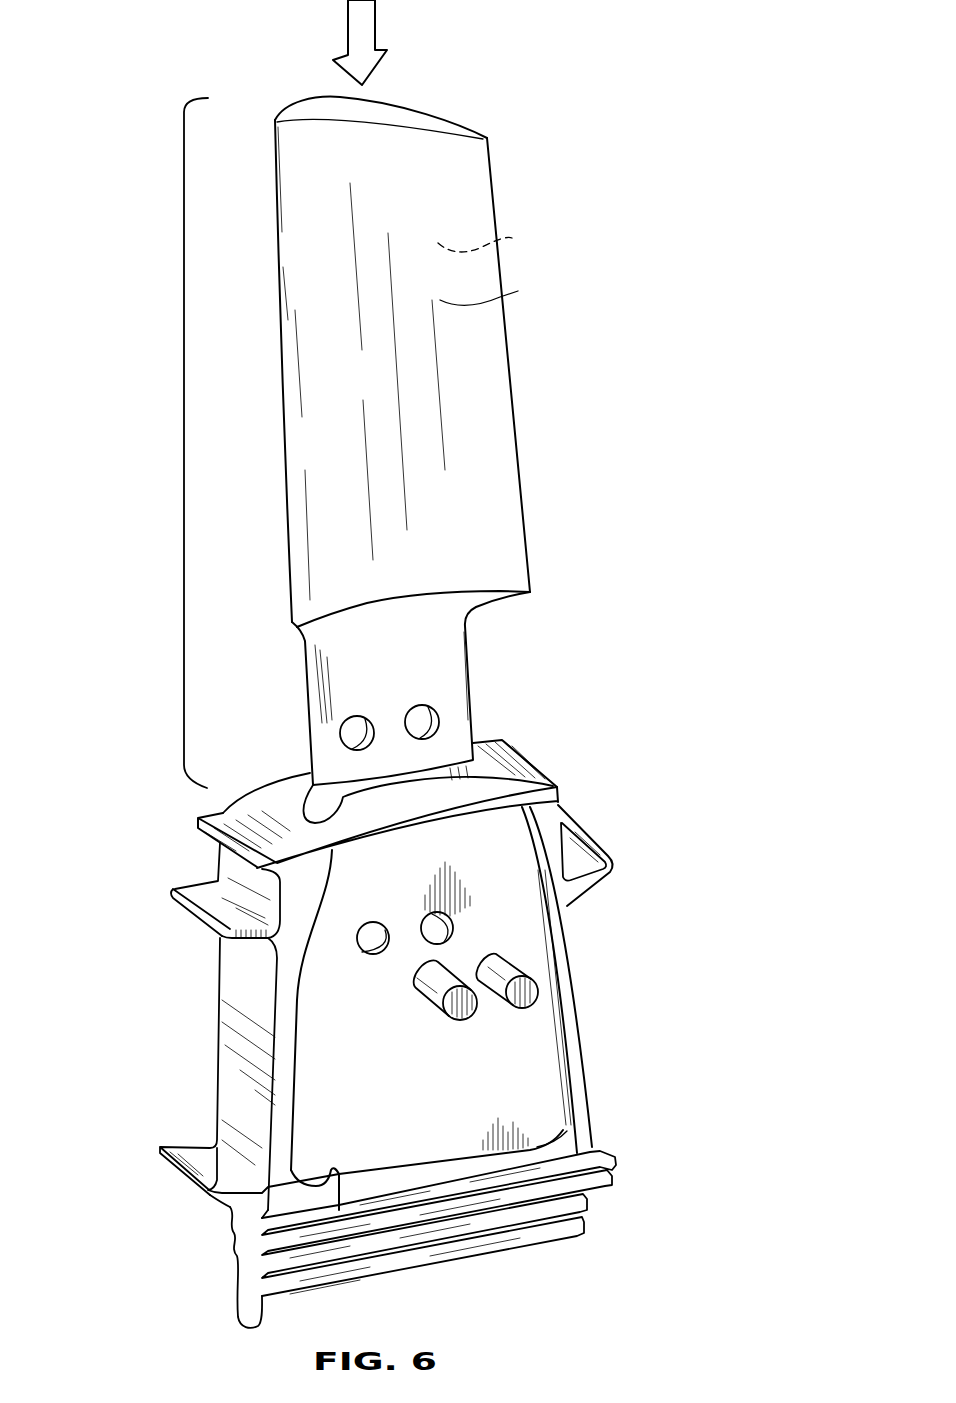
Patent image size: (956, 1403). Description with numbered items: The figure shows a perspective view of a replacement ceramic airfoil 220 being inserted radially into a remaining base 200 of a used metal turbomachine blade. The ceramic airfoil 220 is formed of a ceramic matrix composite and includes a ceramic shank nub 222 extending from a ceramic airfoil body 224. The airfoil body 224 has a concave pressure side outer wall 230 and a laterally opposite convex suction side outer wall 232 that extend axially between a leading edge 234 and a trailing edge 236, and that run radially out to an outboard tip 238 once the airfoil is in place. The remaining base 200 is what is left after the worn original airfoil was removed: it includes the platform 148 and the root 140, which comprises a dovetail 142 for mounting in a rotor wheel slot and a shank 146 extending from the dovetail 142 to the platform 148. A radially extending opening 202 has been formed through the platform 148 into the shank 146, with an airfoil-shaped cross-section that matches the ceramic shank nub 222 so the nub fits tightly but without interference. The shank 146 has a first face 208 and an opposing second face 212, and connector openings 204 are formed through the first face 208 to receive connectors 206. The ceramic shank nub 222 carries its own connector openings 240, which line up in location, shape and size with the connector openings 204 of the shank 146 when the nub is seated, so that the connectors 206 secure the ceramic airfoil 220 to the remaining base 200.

The root 140 is at (618, 1112).
The dovetail 142 is at (495, 1240).
The shank 146 is at (508, 860).
The platform 148 is at (528, 772).
The remaining base 200 is at (150, 1088).
The radially extending opening 202 is at (325, 805).
The connector opening 204 is at (438, 928).
The connector 206 is at (457, 1013).
The first face 208 is at (527, 1073).
The second face 212 is at (246, 983).
The ceramic airfoil 220 is at (184, 443).
The ceramic shank nub 222 is at (467, 675).
The ceramic airfoil body 224 is at (513, 385).
The pressure side outer wall 230 is at (440, 300).
The suction side outer wall 232 is at (438, 243).
The leading edge 234 is at (279, 350).
The trailing edge 236 is at (496, 190).
The outboard tip 238 is at (430, 125).
The connector opening 240 is at (342, 726).